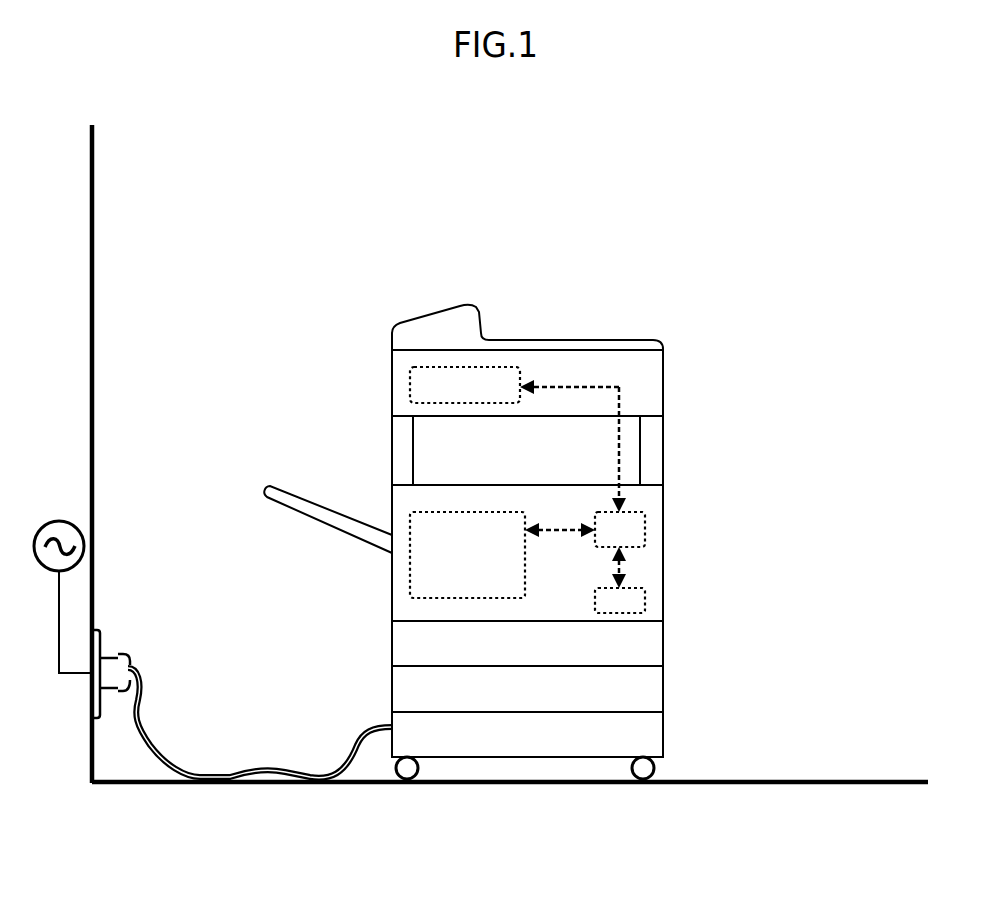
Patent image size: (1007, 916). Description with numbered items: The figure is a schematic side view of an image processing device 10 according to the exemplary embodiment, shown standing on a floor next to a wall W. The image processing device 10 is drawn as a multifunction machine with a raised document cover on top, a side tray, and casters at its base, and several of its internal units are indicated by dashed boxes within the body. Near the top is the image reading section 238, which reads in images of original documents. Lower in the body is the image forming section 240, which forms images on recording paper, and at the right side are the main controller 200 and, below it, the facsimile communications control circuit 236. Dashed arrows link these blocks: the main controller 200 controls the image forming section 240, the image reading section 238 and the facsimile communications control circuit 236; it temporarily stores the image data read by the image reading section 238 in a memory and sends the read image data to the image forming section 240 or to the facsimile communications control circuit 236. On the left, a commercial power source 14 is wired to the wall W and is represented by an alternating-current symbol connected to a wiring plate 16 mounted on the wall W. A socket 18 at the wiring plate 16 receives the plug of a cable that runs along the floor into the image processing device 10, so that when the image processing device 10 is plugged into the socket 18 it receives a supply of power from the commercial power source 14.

The wall W is at (93, 302).
The image processing device 10 is at (403, 282).
The commercial power source 14 is at (76, 529).
The wiring plate 16 is at (101, 641).
The socket 18 is at (120, 665).
The main controller 200 is at (645, 517).
The facsimile communications control circuit 236 is at (643, 613).
The image reading section 238 is at (410, 393).
The image forming section 240 is at (410, 598).